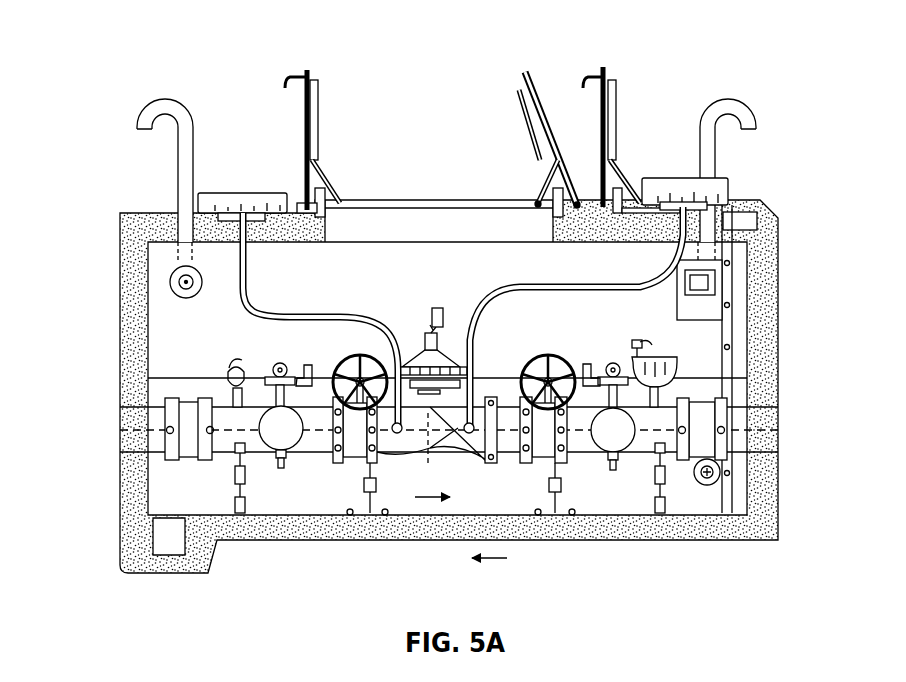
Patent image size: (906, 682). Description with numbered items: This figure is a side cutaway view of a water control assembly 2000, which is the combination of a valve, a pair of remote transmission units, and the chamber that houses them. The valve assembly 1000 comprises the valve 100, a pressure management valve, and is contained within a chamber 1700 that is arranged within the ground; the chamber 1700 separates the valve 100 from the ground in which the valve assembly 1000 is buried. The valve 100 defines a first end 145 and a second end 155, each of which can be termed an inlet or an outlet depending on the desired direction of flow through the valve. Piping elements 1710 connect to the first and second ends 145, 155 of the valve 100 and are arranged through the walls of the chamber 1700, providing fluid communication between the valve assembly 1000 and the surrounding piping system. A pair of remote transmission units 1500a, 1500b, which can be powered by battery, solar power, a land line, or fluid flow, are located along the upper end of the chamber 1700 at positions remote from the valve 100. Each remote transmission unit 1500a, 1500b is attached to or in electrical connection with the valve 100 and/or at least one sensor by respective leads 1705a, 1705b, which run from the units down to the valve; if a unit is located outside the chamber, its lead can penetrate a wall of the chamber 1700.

The water control assembly 2000 is at (136, 23).
The chamber 1700 is at (737, 528).
The remote transmission unit 1500a is at (673, 178).
The remote transmission unit 1500b is at (243, 193).
The valve 100 is at (453, 306).
The valve assembly 1000 is at (505, 477).
The lead 1705a is at (535, 283).
The lead 1705b is at (350, 316).
The piping element 1710 is at (223, 445).
The second end 155 is at (373, 447).
The first end 145 is at (492, 463).